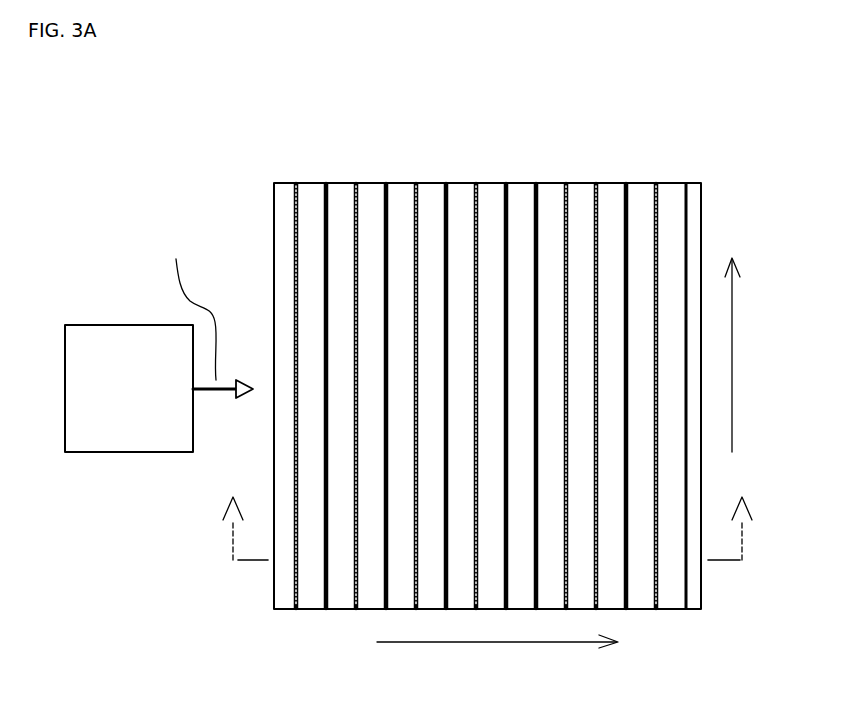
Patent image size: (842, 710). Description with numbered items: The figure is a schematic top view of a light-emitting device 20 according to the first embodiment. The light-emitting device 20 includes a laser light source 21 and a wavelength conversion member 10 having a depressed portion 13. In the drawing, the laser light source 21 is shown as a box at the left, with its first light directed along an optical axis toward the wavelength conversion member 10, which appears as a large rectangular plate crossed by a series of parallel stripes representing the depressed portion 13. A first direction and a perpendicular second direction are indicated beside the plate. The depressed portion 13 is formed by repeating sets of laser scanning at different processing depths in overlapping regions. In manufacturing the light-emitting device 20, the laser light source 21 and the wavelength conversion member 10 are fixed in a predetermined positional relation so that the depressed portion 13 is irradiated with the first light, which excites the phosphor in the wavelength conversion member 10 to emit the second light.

The wavelength conversion member 10 is at (305, 182).
The depressed portion 13 is at (463, 208).
The light-emitting device 20 is at (772, 109).
The laser light source 21 is at (122, 438).